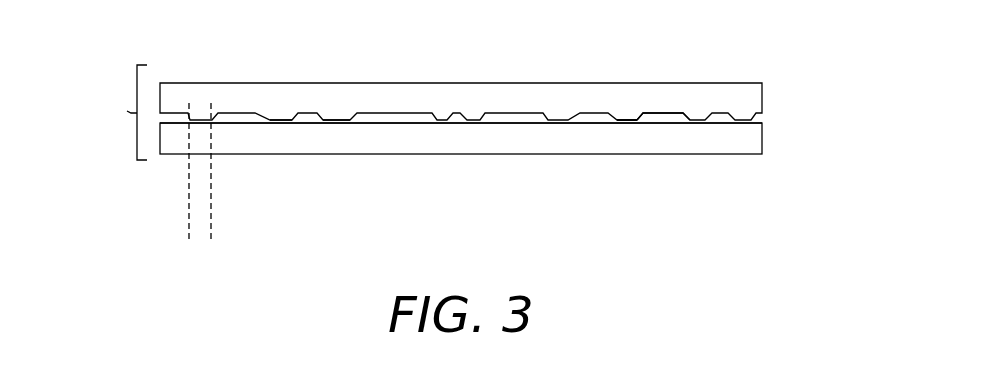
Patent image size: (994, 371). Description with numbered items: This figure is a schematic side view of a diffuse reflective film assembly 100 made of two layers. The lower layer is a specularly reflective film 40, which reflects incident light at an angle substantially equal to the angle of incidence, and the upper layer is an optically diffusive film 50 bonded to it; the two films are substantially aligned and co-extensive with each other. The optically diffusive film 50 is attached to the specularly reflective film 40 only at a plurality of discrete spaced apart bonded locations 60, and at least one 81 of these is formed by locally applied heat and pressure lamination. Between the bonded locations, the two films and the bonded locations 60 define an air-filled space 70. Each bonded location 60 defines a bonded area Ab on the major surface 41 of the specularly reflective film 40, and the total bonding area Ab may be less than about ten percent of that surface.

The diffuse reflective film assembly 100 is at (101, 112).
The optically diffusive film 50 is at (743, 95).
The specularly reflective film 40 is at (755, 138).
The major surface 41 is at (522, 123).
The bonded locations 60 is at (336, 130).
The air-filled space 70 is at (665, 121).
The bonded location formed by heat and pressure lamination 81 is at (280, 120).
The bonded area Ab is at (220, 220).